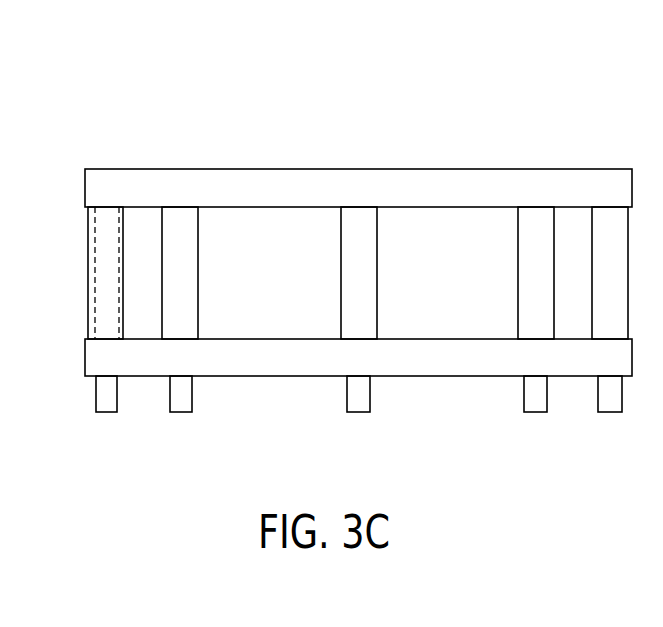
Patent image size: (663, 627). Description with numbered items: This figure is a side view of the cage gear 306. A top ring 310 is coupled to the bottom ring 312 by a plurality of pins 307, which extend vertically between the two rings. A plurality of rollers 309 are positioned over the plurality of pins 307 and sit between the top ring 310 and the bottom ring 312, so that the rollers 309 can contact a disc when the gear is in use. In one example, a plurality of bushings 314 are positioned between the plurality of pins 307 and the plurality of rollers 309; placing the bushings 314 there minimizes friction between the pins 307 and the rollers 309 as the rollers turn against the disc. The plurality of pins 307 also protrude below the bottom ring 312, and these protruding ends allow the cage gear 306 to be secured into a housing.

The cage gear 306 is at (243, 100).
The plurality of pins 307 is at (190, 413).
The plurality of rollers 309 is at (341, 260).
The top ring 310 is at (137, 169).
The bottom ring 312 is at (202, 377).
The plurality of bushings 314 is at (95, 255).